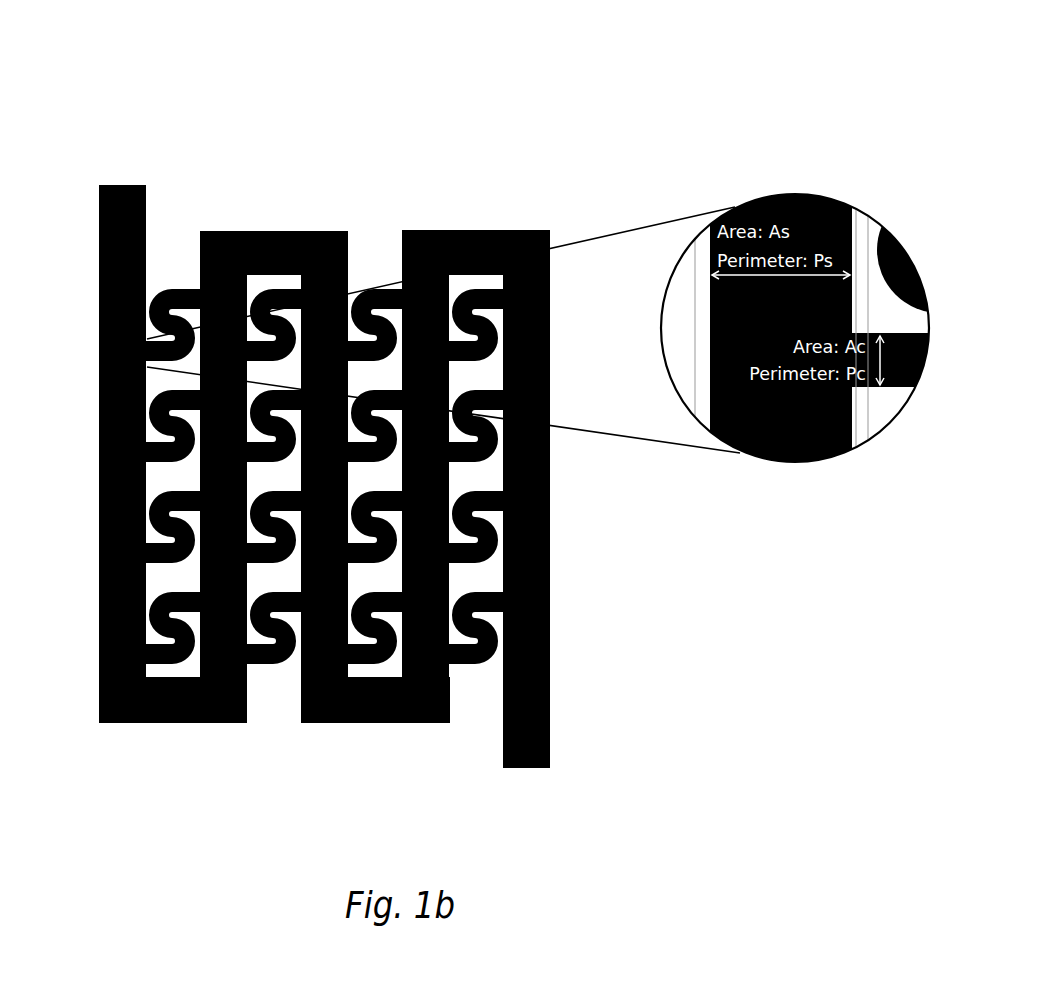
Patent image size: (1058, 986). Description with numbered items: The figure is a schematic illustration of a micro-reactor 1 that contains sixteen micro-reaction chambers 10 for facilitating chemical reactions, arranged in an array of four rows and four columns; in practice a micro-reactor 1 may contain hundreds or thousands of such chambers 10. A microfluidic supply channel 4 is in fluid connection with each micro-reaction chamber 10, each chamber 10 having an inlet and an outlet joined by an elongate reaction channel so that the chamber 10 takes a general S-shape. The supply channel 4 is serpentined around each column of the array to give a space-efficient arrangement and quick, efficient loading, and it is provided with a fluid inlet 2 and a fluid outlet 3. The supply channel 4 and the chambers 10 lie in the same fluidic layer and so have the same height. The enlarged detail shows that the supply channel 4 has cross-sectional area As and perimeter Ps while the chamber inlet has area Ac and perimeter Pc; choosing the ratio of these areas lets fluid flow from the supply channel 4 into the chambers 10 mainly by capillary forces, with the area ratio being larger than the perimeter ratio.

The micro-reactor 1 is at (111, 90).
The fluid inlet 2 is at (112, 185).
The fluid outlet 3 is at (525, 768).
The microfluidic supply channel 4 is at (196, 723).
The micro-reaction chamber 10 is at (168, 288).